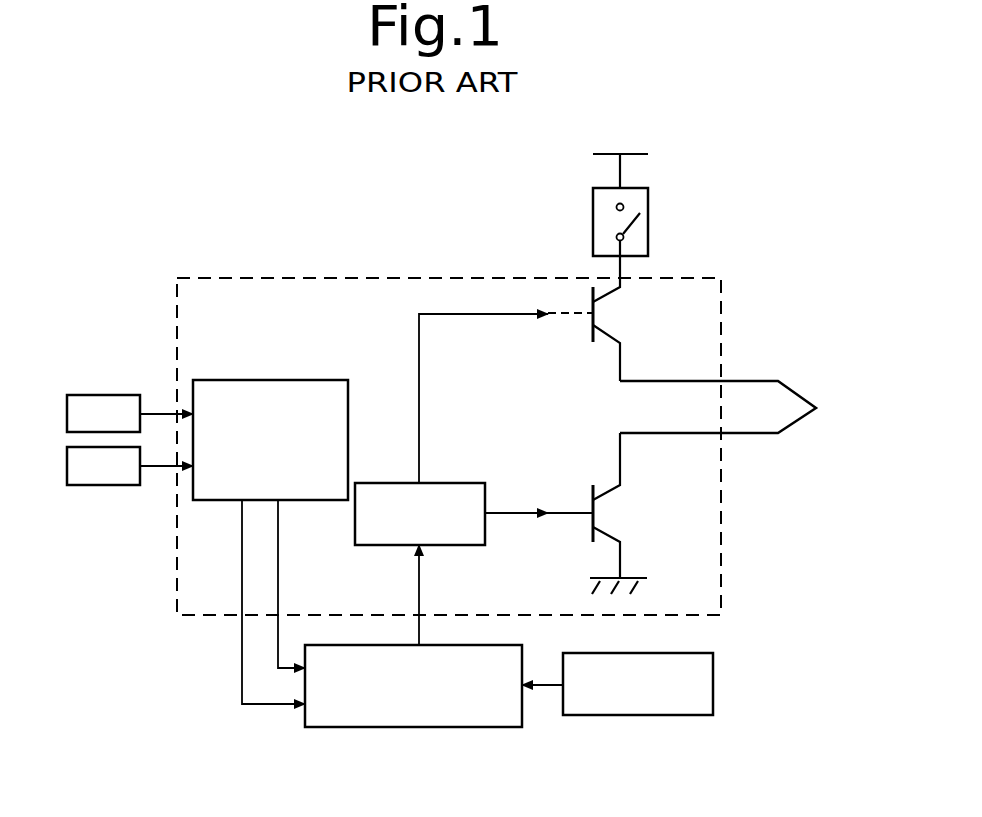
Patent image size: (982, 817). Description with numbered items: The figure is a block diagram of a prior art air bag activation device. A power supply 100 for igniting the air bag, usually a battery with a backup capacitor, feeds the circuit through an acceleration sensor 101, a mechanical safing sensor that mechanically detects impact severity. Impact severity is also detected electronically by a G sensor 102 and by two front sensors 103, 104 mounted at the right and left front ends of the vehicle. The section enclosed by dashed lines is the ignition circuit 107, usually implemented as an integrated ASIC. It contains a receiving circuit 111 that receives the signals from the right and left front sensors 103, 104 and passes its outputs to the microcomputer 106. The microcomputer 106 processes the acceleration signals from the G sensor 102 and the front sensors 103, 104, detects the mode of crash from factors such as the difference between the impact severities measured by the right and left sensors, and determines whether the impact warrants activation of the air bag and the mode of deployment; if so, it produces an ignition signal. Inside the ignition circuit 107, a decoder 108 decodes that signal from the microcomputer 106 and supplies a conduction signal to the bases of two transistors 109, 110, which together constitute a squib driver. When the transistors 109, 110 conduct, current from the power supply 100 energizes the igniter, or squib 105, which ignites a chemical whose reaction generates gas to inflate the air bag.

The power supply 100 is at (638, 153).
The acceleration sensor (mechanical safing sensor) 101 is at (650, 220).
The acceleration sensor (G sensor) 102 is at (665, 718).
The acceleration sensor (right front sensor) 103 is at (113, 394).
The acceleration sensor (left front sensor) 104 is at (113, 487).
The igniter (squib) 105 is at (795, 393).
The microcomputer 106 is at (476, 729).
The ignition circuit 107 is at (723, 590).
The decoder 108 is at (457, 482).
The transistor 109 is at (617, 327).
The transistor 110 is at (617, 513).
The receiving circuit 111 is at (290, 379).